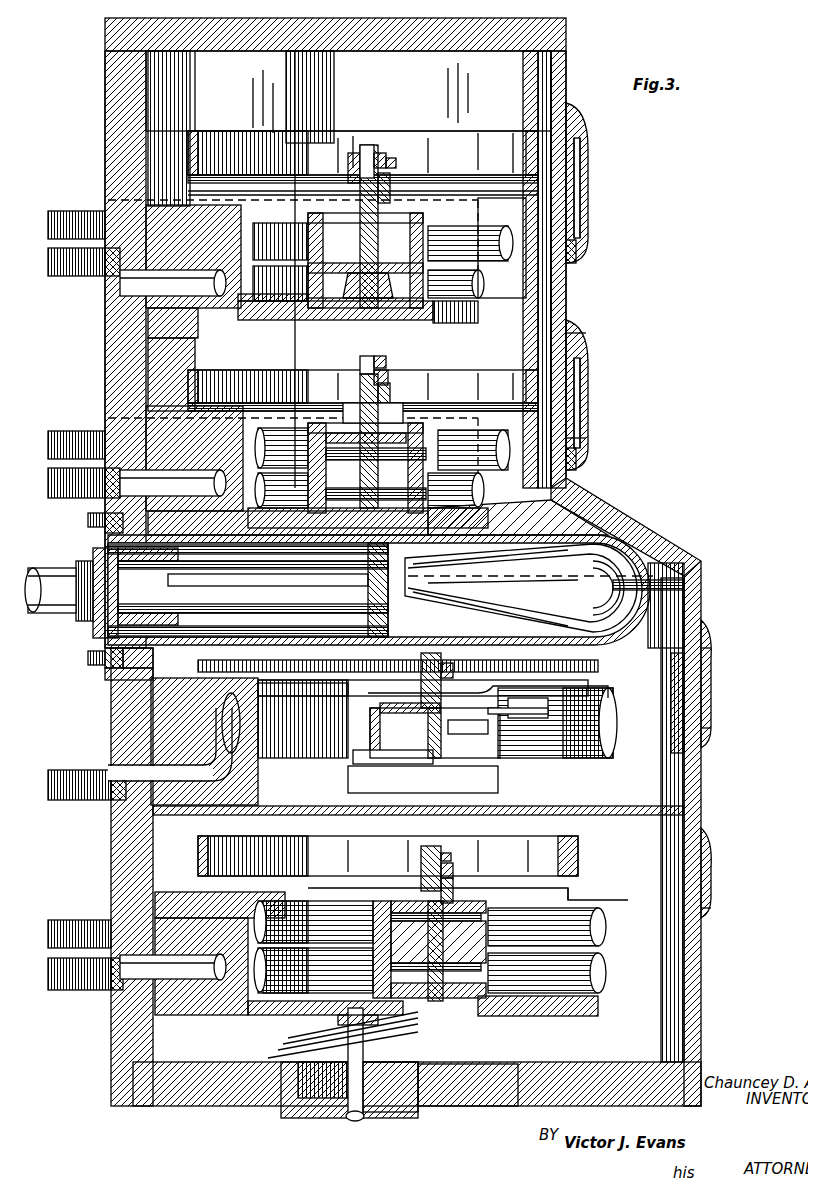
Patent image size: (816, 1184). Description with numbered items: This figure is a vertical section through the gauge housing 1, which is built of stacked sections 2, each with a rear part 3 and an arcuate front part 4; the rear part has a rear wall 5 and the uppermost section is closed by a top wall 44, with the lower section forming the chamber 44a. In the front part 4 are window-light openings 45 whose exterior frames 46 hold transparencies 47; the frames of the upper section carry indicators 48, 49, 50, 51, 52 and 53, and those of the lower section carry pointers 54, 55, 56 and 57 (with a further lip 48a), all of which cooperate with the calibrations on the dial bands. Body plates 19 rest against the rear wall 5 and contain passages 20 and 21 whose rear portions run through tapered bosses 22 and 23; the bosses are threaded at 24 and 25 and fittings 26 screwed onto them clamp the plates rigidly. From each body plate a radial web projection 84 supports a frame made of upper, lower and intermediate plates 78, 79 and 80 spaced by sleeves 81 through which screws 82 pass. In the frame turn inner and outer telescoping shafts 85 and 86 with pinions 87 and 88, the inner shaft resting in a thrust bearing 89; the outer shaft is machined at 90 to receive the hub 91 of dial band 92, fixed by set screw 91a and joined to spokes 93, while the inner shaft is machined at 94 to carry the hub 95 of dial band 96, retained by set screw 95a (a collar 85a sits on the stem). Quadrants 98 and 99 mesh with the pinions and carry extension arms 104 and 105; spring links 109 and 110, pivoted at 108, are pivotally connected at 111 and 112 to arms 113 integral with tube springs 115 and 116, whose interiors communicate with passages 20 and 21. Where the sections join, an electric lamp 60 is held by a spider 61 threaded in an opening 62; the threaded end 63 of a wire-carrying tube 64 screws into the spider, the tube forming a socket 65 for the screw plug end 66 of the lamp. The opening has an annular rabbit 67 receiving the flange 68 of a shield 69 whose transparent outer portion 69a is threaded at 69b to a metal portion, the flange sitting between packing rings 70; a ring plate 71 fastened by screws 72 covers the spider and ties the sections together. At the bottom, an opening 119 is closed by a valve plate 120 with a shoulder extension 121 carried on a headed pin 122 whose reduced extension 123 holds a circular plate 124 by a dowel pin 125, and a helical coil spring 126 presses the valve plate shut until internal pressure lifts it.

The gauge housing 1 is at (693, 960).
The section 2 is at (558, 275).
The rear part 3 is at (97, 130).
The front part 4 is at (558, 298).
The rear wall 5 is at (97, 100).
The body plate 19 is at (150, 362).
The passage 20 is at (138, 160).
The passage 21 is at (200, 335).
The boss 22 is at (115, 215).
The boss 23 is at (115, 288).
The threaded portion 24 is at (60, 225).
The threaded portion 25 is at (75, 290).
The fitting 26 is at (75, 455).
The top wall 44 is at (435, 43).
The lower chamber 44a is at (703, 708).
The window-light opening 45 is at (568, 245).
The exterior frame 46 is at (575, 105).
The transparency 47 is at (572, 170).
The indicator 48 is at (575, 148).
The gasket lip 48a is at (703, 905).
The indicator 49 is at (570, 200).
The indicator 50 is at (578, 335).
The indicator 51 is at (574, 362).
The indicator 52 is at (570, 385).
The indicator 53 is at (576, 425).
The pointer 54 is at (703, 655).
The pointer 55 is at (703, 682).
The pointer 56 is at (703, 830).
The pointer 57 is at (684, 560).
The electric lamp 60 is at (529, 588).
The spider 61 is at (95, 618).
The opening 62 is at (97, 668).
The threaded end 63 is at (150, 553).
The tube 64 is at (30, 605).
The socket 65 is at (205, 578).
The screw plug end 66 is at (150, 580).
The annular rabbit 67 is at (85, 545).
The flange 68 is at (115, 652).
The shield 69 is at (300, 610).
The outer portion 69a is at (610, 625).
The threaded joint 69b is at (360, 612).
The packing ring 70 is at (130, 617).
The ring plate 71 is at (80, 512).
The screw 72 is at (80, 652).
The upper plate 78 is at (420, 205).
The lower plate 79 is at (470, 1018).
The intermediate plate 80 is at (420, 548).
The spacing sleeve 81 is at (610, 1010).
The screw 82 is at (310, 185).
The radial web projection 84 is at (340, 312).
The inner shaft 85 is at (370, 240).
The stem collar 85a is at (395, 350).
The outer tubular shaft 86 is at (280, 283).
The pinion 87 is at (385, 275).
The pinion 88 is at (300, 225).
The thrust bearing 89 is at (380, 312).
The machined portion 90 is at (352, 135).
The hub 91 is at (382, 175).
The set screw 91a is at (395, 183).
The gauge dial band 92 is at (502, 312).
The spokes 93 is at (490, 167).
The machined portion 94 is at (378, 150).
The hub 95 is at (352, 140).
The set screw 95a is at (385, 150).
The gauge dial band 96 is at (515, 115).
The quadrant 98 is at (495, 732).
The quadrant 99 is at (528, 918).
The extension arm 104 is at (280, 490).
The extension arm 105 is at (318, 430).
The pivot connection 108 is at (300, 450).
The spring link 109 is at (320, 520).
The spring link 110 is at (360, 414).
The pivot connection 111 is at (500, 712).
The pivot connection 112 is at (478, 900).
The arm 113 is at (470, 1000).
The tube spring 115 is at (478, 275).
The tube spring 116 is at (505, 235).
The opening 119 is at (440, 1098).
The valve plate 120 is at (305, 1100).
The shoulder extension 121 is at (400, 1085).
The headed pin 122 is at (347, 1080).
The reduced extension 123 is at (330, 1015).
The circular plate 124 is at (400, 1032).
The dowel pin 125 is at (400, 1018).
The helical coil spring 126 is at (268, 1050).